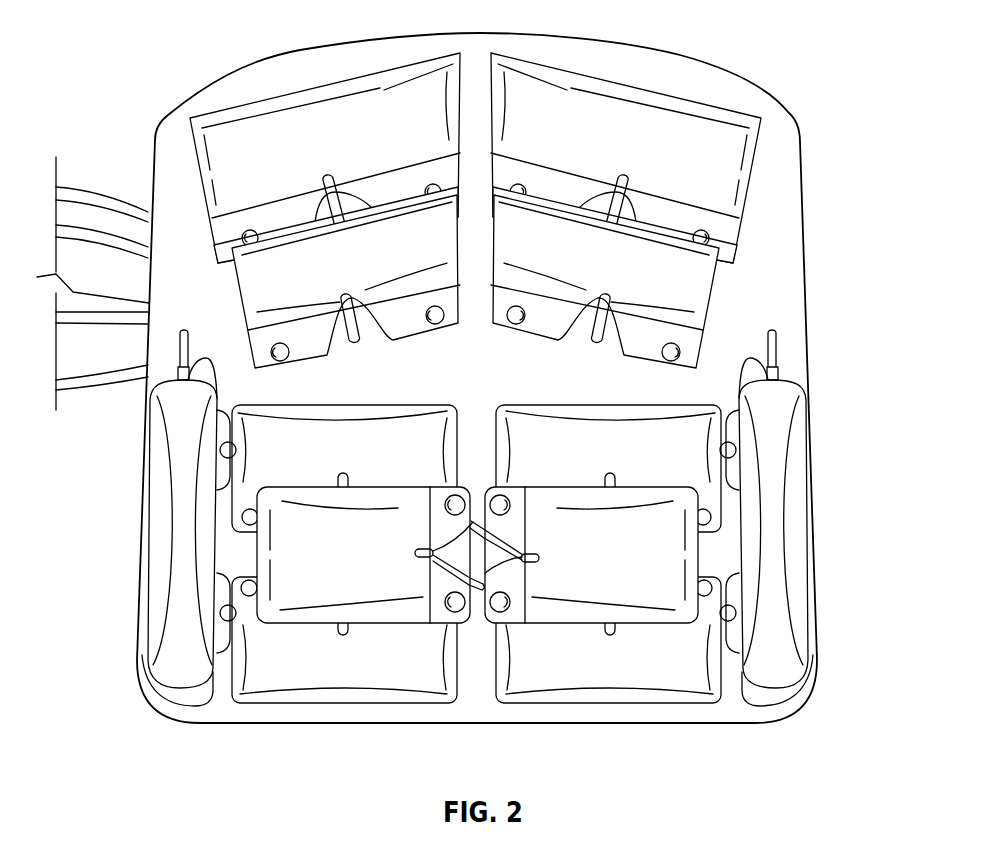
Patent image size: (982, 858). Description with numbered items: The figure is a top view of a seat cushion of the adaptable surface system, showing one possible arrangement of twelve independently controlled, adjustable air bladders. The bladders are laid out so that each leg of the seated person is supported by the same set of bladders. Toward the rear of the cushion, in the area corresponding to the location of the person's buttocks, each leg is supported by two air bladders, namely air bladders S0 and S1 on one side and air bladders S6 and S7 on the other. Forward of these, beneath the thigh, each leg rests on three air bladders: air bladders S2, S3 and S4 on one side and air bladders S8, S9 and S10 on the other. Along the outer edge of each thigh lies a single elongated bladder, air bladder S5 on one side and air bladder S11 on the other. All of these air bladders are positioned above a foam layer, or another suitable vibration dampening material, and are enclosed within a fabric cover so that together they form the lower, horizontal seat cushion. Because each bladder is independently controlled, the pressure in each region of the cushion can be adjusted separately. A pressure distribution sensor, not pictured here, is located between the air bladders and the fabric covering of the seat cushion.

The air bladder S0 is at (270, 128).
The air bladder S1 is at (273, 280).
The air bladder S2 is at (260, 452).
The air bladder S3 is at (335, 675).
The air bladder S4 is at (293, 552).
The air bladder S5 is at (155, 595).
The air bladder S6 is at (690, 165).
The air bladder S7 is at (670, 283).
The air bladder S8 is at (680, 470).
The air bladder S9 is at (625, 675).
The air bladder S10 is at (680, 512).
The air bladder S11 is at (800, 607).